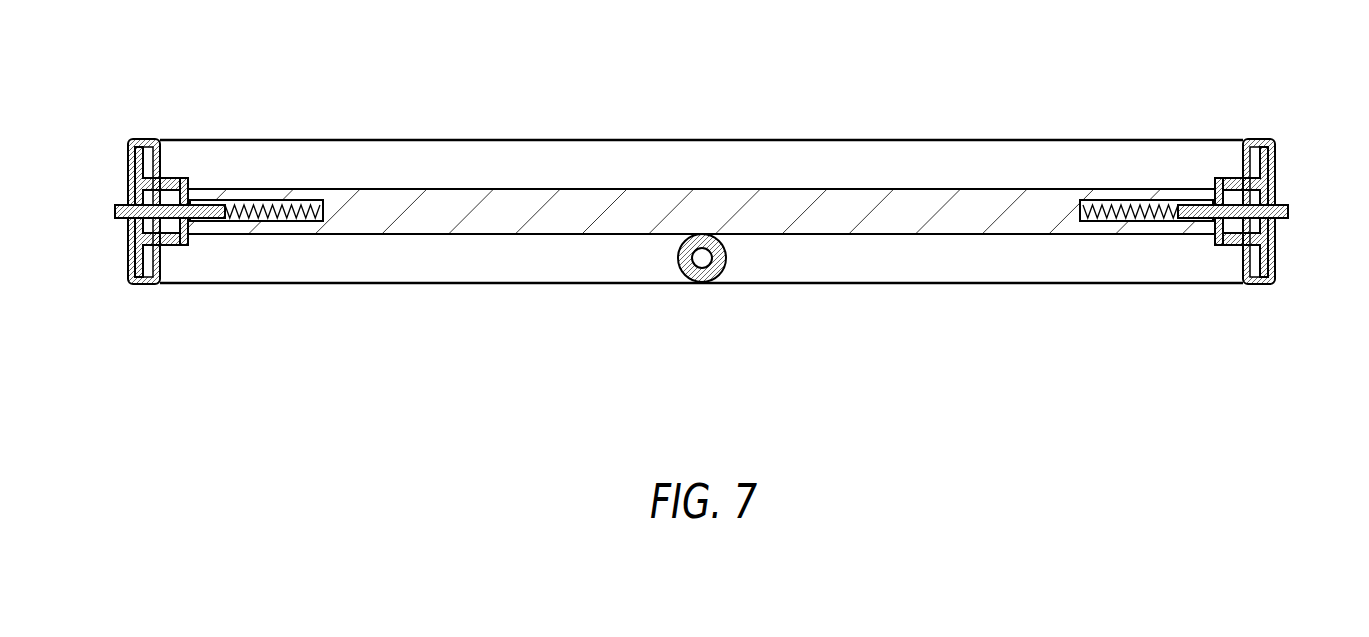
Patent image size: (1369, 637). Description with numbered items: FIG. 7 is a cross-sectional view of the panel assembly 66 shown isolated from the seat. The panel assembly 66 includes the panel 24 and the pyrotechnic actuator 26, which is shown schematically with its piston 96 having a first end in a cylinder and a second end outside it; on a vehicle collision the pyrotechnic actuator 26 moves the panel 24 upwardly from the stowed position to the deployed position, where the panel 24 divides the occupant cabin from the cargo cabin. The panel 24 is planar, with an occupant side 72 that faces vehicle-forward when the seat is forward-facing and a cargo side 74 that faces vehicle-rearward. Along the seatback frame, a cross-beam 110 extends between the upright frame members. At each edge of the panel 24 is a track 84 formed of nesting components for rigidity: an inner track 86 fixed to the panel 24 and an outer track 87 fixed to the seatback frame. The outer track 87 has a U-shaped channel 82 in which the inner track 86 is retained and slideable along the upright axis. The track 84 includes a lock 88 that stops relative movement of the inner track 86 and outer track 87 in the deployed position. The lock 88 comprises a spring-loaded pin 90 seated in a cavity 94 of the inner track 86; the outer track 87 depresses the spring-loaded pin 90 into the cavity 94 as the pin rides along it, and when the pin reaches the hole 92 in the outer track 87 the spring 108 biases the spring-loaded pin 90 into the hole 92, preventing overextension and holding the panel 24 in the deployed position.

The panel 24 is at (500, 237).
The pyrotechnic actuator 26 is at (695, 286).
The panel assembly 66 is at (580, 128).
The occupant side 72 is at (867, 188).
The cargo side 74 is at (955, 236).
The channel 82 is at (158, 195).
The track 84 is at (178, 246).
The inner track 86 is at (188, 180).
The outer track 87 is at (131, 279).
The lock 88 is at (110, 222).
The spring-loaded pin 90 is at (113, 209).
The hole 92 is at (132, 238).
The cavity 94 is at (325, 208).
The piston 96 is at (718, 252).
The spring 108 is at (258, 200).
The cross-beam 110 is at (373, 284).